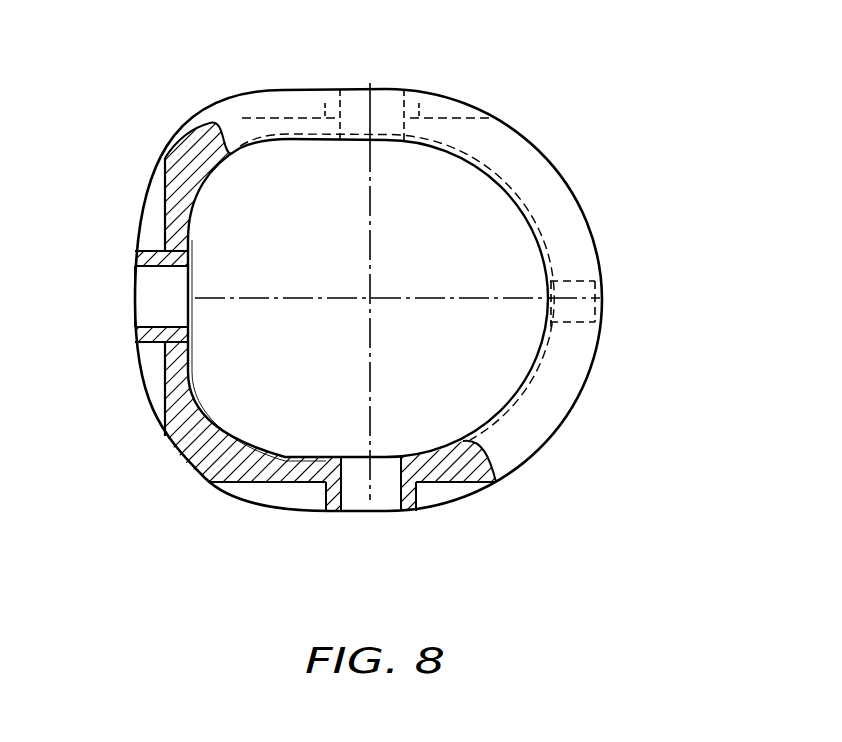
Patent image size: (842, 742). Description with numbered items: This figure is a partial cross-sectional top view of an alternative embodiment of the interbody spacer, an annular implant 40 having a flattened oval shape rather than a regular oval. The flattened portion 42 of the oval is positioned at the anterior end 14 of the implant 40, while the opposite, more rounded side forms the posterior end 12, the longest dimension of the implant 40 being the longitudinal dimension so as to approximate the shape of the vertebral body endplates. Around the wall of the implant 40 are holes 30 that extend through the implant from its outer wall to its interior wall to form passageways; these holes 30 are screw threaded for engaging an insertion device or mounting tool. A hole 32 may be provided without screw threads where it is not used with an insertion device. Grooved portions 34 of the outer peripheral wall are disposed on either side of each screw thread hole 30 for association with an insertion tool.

The posterior end 12 is at (597, 243).
The anterior end 14 is at (133, 262).
The holes 30 is at (383, 108).
The hole 32 is at (579, 292).
The grooved portions 34 is at (287, 105).
The implant 40 is at (615, 138).
The flattened portion 42 is at (178, 398).